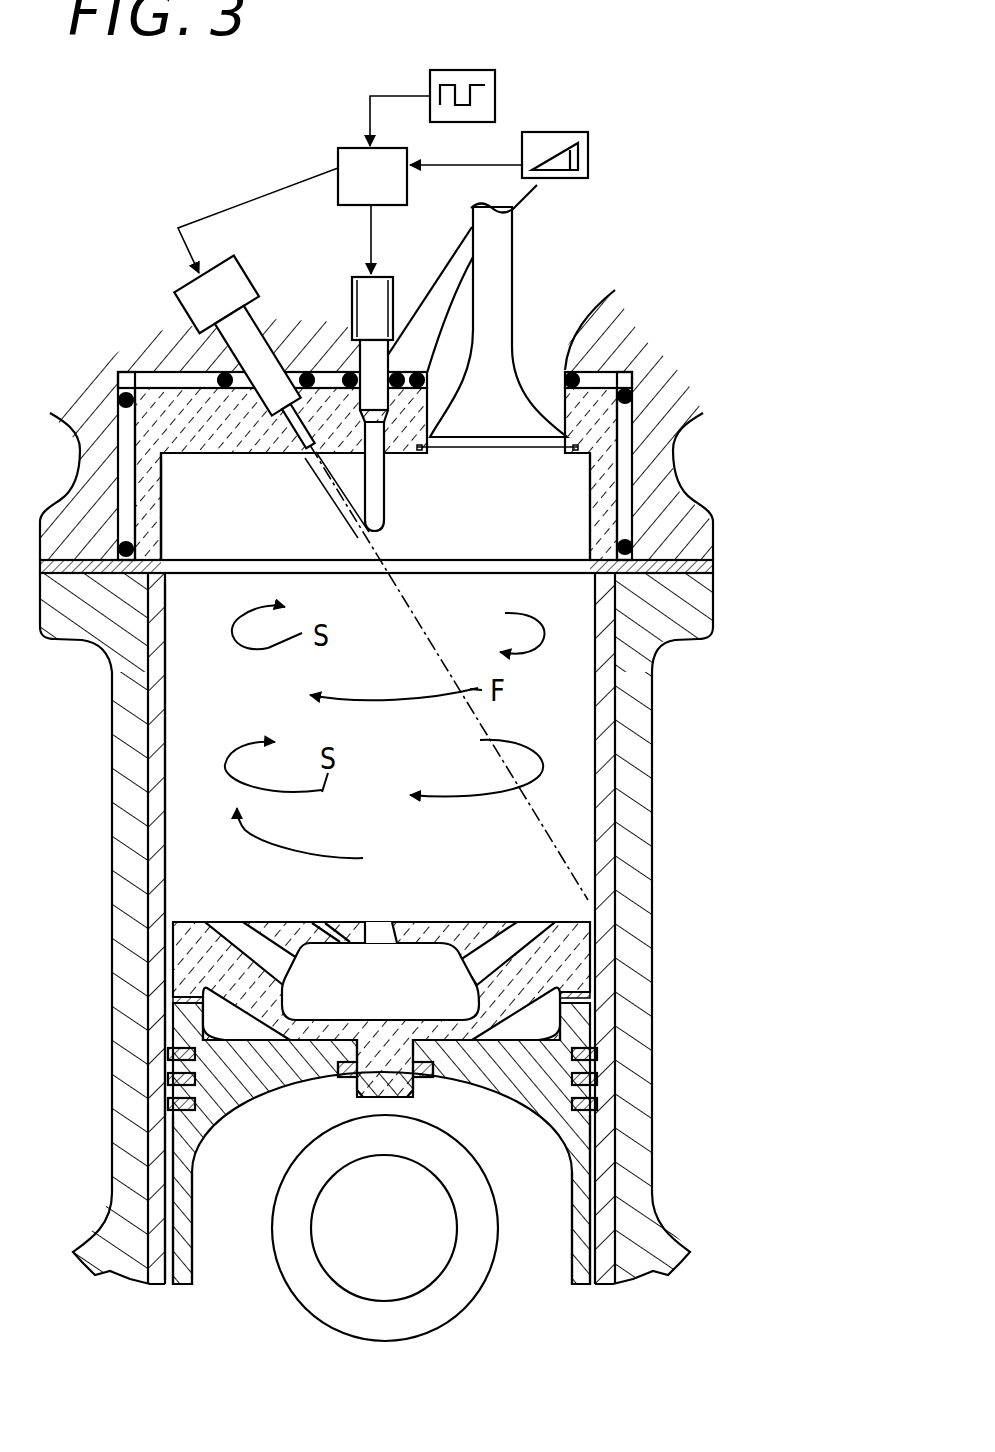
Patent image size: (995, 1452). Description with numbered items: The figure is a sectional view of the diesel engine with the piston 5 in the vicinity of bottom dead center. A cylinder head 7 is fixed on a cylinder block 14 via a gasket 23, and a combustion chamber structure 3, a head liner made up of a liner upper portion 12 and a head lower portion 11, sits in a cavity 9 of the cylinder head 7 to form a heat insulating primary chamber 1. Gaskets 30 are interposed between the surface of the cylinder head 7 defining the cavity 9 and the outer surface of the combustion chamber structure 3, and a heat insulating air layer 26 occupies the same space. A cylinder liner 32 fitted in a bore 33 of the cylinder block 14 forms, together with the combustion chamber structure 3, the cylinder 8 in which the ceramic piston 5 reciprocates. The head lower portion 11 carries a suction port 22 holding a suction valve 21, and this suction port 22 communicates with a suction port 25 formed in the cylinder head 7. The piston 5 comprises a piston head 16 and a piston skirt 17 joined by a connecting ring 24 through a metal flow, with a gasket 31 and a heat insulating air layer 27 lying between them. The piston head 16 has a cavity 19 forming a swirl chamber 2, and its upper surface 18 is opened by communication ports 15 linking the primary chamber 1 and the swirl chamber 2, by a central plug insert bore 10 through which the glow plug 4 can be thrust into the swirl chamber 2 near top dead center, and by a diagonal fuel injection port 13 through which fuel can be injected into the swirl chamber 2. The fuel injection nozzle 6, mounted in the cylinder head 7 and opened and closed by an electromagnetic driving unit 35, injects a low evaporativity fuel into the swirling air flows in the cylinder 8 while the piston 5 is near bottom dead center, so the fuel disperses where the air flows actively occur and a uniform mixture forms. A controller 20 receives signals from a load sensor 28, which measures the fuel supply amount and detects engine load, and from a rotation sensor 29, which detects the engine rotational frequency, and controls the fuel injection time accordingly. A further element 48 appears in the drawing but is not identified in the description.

The primary chamber 1 is at (296, 517).
The swirl chamber 2 is at (390, 1002).
The combustion chamber structure 3 is at (145, 435).
The glow plug 4 is at (397, 340).
The piston 5 is at (515, 1112).
The fuel injection nozzle 6 is at (248, 355).
The cylinder head 7 is at (675, 506).
The cylinder 8 is at (605, 1220).
The cavity 9 is at (630, 445).
The plug insert bore 10 is at (387, 922).
The head lower portion 11 is at (157, 402).
The liner upper portion 12 is at (140, 482).
The fuel injection port 13 is at (322, 940).
The cylinder block 14 is at (640, 1085).
The communication ports 15 is at (262, 940).
The piston head 16 is at (258, 1005).
The piston skirt 17 is at (205, 1108).
The upper surface 18 is at (470, 922).
The cavity 19 is at (460, 1017).
The controller 20 is at (388, 195).
The suction valve 21 is at (487, 420).
The suction port 22 is at (555, 393).
The gasket 23 is at (713, 565).
The connecting ring 24 is at (347, 1082).
The suction port 25 is at (588, 272).
The heat insulating air layer 26 is at (625, 478).
The heat insulating air layer 27 is at (502, 1035).
The load sensor 28 is at (590, 150).
The rotation sensor 29 is at (497, 96).
The gaskets 30 is at (348, 373).
The gasket 31 is at (595, 1022).
The cylinder liner 32 is at (165, 1052).
The bore 33 is at (165, 1106).
The electromagnetic driving unit 35 is at (183, 280).
The cylinder wall surface 48 is at (163, 517).